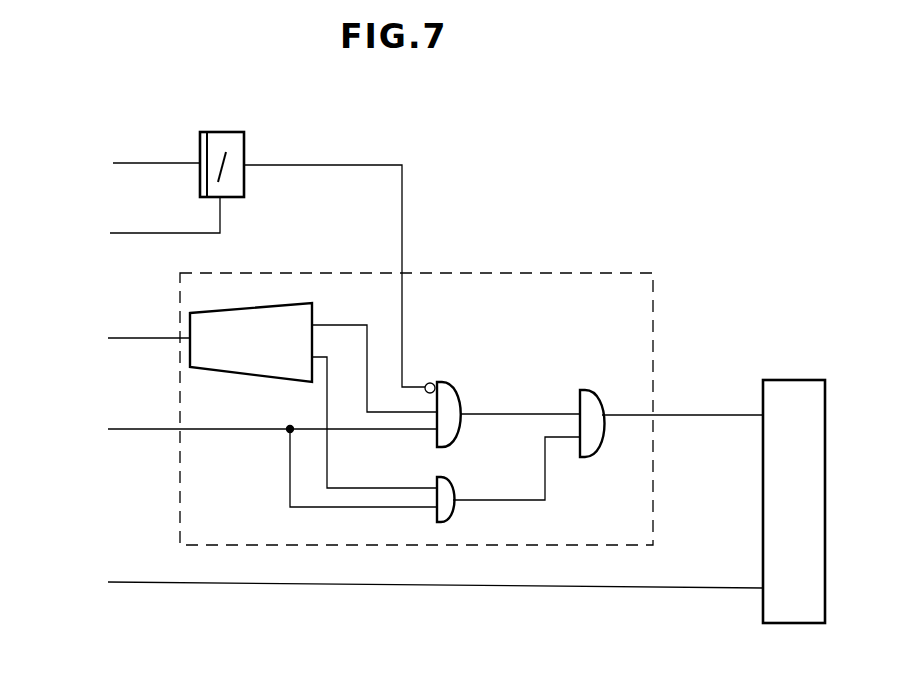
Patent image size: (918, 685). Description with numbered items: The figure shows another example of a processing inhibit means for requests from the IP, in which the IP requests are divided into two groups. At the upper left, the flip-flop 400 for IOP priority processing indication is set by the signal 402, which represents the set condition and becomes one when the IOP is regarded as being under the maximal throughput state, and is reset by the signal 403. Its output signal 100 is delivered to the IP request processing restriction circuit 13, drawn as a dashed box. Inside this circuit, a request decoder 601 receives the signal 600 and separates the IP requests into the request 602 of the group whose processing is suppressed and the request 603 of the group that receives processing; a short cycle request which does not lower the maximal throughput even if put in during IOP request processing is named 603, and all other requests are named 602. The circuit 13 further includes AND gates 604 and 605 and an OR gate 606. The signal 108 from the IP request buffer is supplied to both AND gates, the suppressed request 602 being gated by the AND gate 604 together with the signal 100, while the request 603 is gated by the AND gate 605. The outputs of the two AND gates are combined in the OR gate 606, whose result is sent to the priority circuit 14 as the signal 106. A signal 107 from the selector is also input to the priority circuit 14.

The flip-flop for IOP priority processing indication 400 is at (230, 132).
The output signal of AND gate 402 is at (117, 161).
The reset signal 403 is at (127, 224).
The output signal of flip-flop 100 is at (377, 165).
The IP request processing restriction circuit 13 is at (575, 273).
The request decoder 601 is at (289, 303).
The input signal of request decoder 600 is at (114, 339).
The request of the group suppressing the processing 602 is at (342, 325).
The request of the group receiving the processing 603 is at (313, 383).
The signal from IP request buffer 108 is at (237, 458).
The AND gate 604 is at (455, 385).
The AND gate 605 is at (488, 466).
The OR gate 606 is at (590, 390).
The signal to priority circuit 106 is at (703, 415).
The signal from selector 107 is at (400, 583).
The priority circuit 14 is at (782, 380).